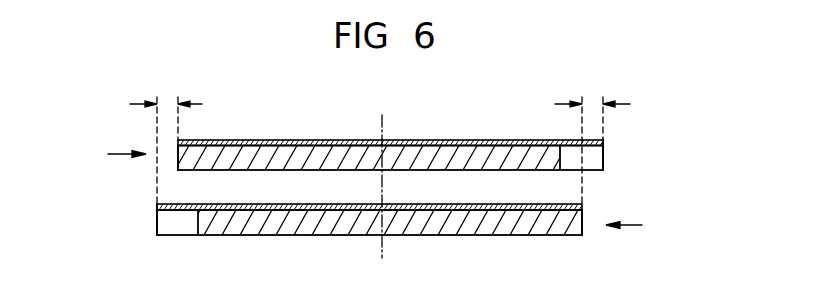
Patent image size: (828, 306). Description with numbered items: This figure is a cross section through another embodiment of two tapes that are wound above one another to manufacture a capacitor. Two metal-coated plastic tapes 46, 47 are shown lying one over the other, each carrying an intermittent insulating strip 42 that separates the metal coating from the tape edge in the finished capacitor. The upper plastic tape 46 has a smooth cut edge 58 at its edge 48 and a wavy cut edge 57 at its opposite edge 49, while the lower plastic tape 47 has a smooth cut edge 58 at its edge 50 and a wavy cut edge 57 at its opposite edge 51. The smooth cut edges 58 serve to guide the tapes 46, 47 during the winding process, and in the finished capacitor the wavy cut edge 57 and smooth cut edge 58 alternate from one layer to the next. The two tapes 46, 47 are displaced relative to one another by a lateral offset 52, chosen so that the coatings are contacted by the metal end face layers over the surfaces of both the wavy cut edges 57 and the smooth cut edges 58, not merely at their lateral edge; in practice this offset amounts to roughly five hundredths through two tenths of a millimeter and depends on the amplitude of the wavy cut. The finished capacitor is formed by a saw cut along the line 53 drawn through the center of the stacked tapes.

The intermittent insulating strip 42 is at (233, 140).
The plastic tape 46 is at (427, 157).
The plastic tape 47 is at (477, 225).
The edge 48 is at (177, 163).
The edge 49 is at (590, 162).
The edge 50 is at (583, 228).
The edge 51 is at (172, 222).
The lateral offset 52 is at (167, 103).
The line 53 is at (384, 122).
The wavy cut edge 57 is at (157, 213).
The smooth cut edge 58 is at (177, 149).